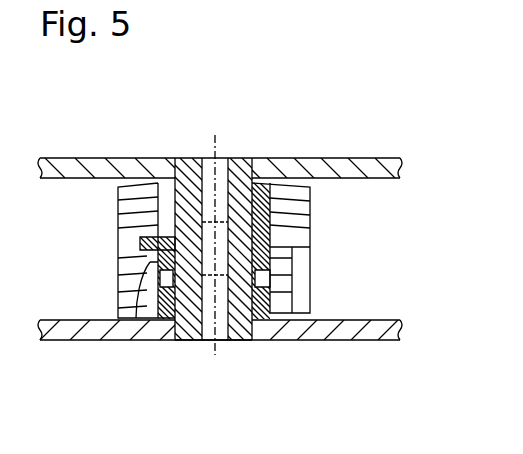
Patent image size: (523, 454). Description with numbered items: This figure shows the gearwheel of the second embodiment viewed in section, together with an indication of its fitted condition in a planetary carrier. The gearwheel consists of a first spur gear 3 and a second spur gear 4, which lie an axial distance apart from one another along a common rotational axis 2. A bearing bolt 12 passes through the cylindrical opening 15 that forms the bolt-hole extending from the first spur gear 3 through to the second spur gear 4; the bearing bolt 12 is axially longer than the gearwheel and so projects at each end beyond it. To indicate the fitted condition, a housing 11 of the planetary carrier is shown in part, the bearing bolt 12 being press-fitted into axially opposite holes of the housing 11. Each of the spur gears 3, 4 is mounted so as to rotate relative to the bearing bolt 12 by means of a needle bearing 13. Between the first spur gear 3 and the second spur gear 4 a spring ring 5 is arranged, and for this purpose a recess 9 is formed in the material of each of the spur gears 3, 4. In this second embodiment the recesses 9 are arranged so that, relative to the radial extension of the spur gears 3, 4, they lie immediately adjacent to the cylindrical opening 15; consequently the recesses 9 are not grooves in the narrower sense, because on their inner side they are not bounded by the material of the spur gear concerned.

The rotational axis 2 is at (221, 343).
The first spur gear 3 is at (118, 283).
The second spur gear 4 is at (140, 222).
The spring ring 5 is at (137, 243).
The recess 9 is at (283, 230).
The housing 11 is at (342, 158).
The bearing bolt 12 is at (247, 180).
The needle bearing 13 is at (283, 300).
The cylindrical opening 15 is at (177, 346).